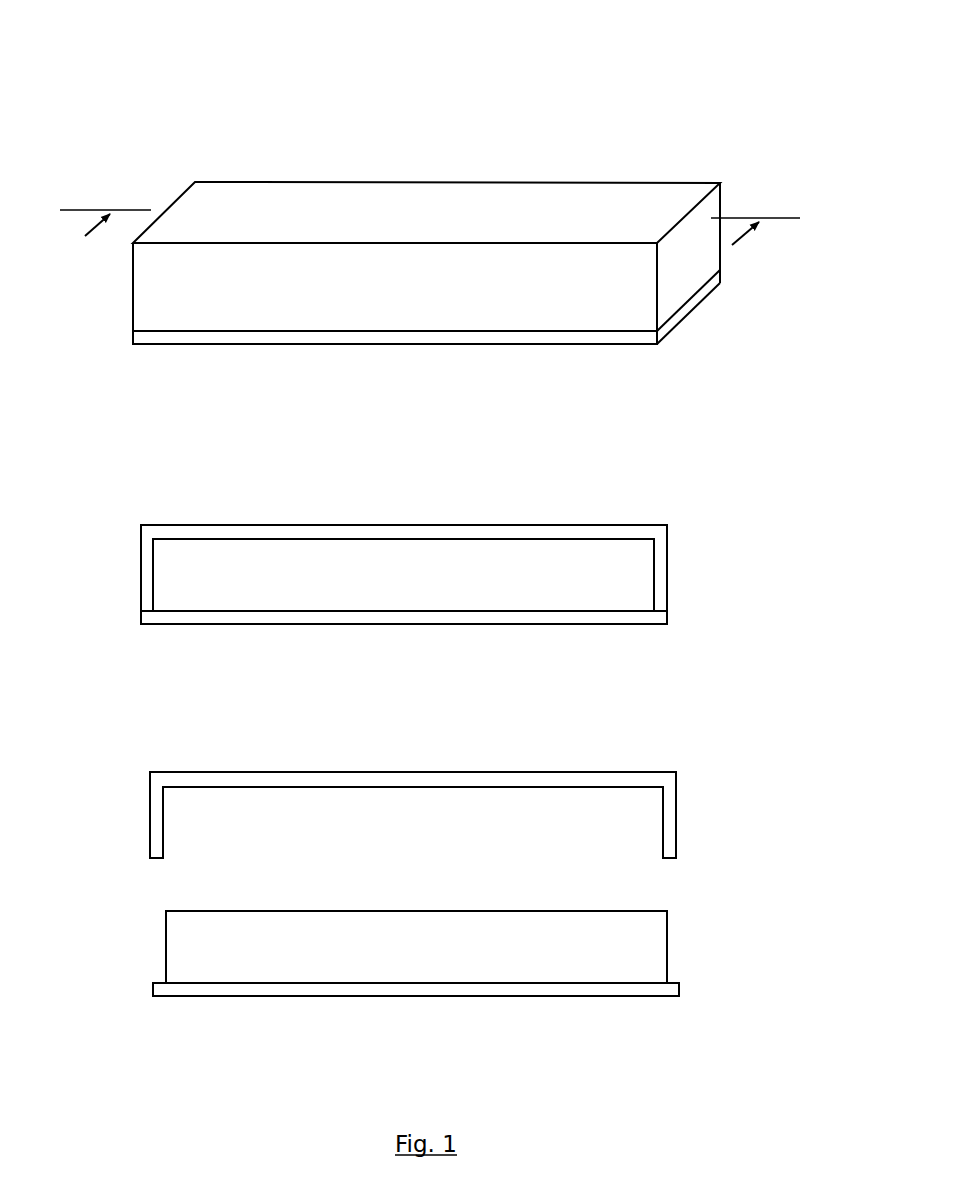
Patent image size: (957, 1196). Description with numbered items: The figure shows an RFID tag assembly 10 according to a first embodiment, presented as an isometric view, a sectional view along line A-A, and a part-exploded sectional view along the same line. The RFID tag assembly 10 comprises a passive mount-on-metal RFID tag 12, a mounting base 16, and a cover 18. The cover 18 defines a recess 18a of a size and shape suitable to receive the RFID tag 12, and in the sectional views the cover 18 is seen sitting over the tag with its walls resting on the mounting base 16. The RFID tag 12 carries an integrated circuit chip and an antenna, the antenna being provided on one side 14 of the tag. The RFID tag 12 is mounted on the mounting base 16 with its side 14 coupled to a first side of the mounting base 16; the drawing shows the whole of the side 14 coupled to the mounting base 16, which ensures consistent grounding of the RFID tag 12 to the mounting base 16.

The RFID tag assembly 10 is at (197, 89).
The passive mount-on-metal RFID tag 12 is at (180, 575).
The side of the RFID tag 14 is at (556, 990).
The mounting base 16 is at (444, 335).
The cover 18 is at (436, 198).
The recess 18a is at (474, 828).